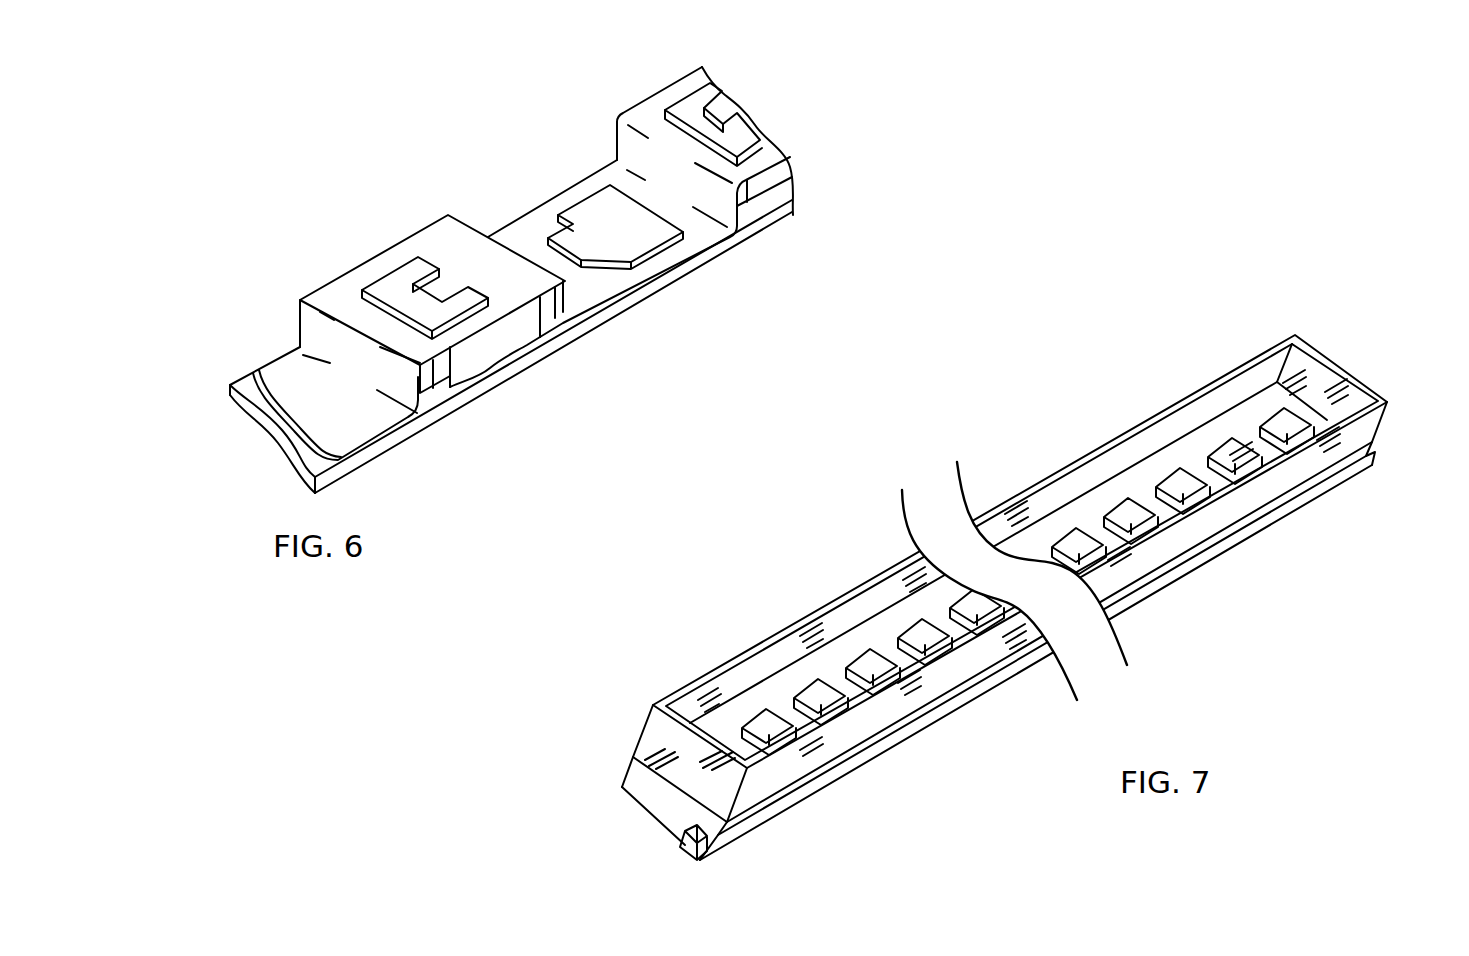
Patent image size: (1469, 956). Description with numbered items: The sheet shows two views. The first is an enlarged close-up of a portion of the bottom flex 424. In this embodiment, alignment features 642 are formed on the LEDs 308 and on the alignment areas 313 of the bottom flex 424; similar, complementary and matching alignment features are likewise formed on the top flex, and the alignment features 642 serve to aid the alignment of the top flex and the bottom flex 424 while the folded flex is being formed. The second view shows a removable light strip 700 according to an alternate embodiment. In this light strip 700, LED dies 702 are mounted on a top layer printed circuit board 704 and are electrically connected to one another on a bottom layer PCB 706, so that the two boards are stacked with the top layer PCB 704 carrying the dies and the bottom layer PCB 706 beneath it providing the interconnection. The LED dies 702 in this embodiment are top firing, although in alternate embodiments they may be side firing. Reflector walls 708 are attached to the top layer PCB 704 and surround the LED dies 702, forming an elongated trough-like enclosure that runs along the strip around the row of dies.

In FIG. 6, the bottom flex 424 is at (245, 252).
In FIG. 6, the alignment features 642 is at (585, 213).
In FIG. 6, the alignment areas 313 is at (653, 283).
In FIG. 6, the LEDs 308 is at (527, 347).
In FIG. 7, the removable light strip 700 is at (648, 596).
In FIG. 7, the LED dies 702 is at (1176, 476).
In FIG. 7, the top layer printed circuit board 704 is at (630, 765).
In FIG. 7, the bottom layer PCB 706 is at (620, 786).
In FIG. 7, the reflector walls 708 is at (1340, 360).